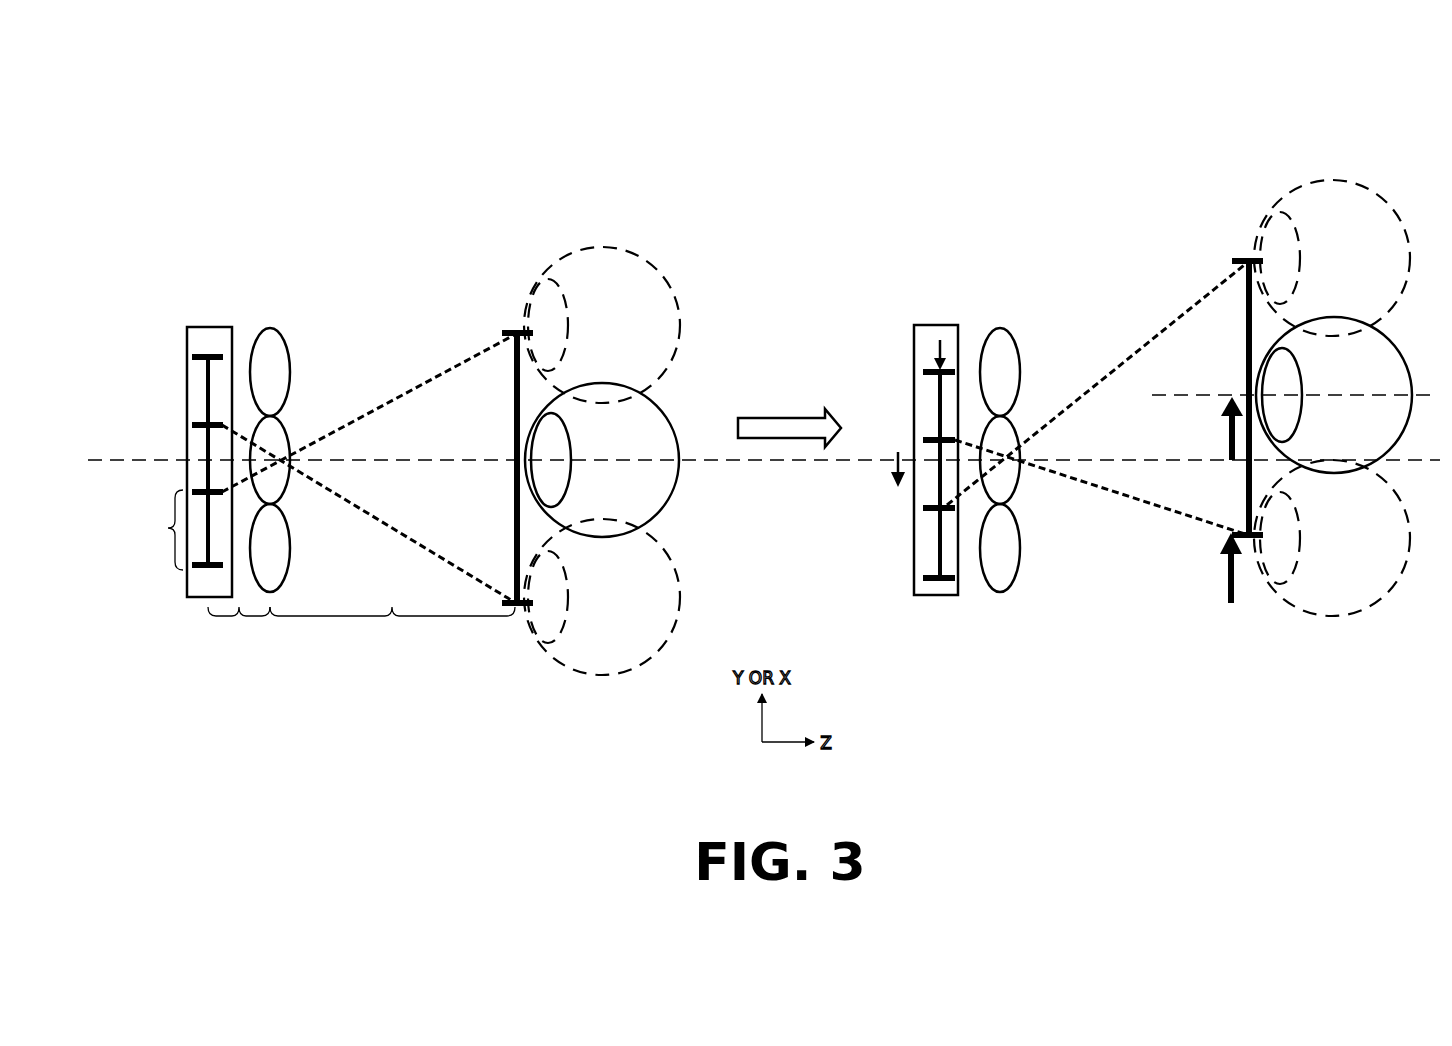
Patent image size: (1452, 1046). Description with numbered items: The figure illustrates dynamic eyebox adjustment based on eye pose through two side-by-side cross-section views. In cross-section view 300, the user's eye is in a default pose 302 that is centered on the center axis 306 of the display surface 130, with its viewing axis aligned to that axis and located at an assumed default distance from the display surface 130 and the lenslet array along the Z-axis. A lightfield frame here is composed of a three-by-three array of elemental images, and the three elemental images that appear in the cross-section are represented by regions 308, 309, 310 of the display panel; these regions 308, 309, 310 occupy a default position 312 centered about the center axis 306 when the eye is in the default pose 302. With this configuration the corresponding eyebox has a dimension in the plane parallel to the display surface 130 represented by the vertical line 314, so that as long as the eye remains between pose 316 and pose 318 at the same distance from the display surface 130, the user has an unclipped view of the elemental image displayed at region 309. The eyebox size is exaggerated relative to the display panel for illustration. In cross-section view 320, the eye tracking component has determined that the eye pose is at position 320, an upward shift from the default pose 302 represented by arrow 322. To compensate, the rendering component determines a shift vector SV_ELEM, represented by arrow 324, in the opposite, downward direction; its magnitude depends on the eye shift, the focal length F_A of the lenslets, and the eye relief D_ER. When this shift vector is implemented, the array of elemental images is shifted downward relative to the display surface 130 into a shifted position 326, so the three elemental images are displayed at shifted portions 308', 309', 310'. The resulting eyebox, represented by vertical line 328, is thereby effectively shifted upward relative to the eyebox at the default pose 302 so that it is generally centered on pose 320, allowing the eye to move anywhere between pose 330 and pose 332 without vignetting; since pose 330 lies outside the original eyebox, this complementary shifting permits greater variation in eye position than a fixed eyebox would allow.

The display surface 130 is at (236, 348).
The cross-section view 300 is at (398, 238).
The default pose 302 is at (663, 514).
The center axis 306 is at (768, 455).
The region of display panel 308 is at (173, 391).
The region of display panel 309 is at (173, 460).
The region of display panel 310 is at (168, 564).
The default position 312 is at (205, 580).
The vertical line representing eyebox 314 is at (516, 418).
The pose 316 is at (602, 246).
The pose 318 is at (602, 680).
The cross-section view / shifted eye pose 320 is at (1099, 225).
The arrow representing eye pose shift 322 is at (1228, 445).
The arrow representing shift vector SV_ELEM 324 is at (893, 480).
The shifted position 326 is at (936, 576).
The shifted portion 308' is at (902, 406).
The shifted portion 309' is at (903, 464).
The shifted portion 310' is at (902, 556).
The vertical line representing shifted eyebox 328 is at (1246, 372).
The pose 330 is at (1330, 180).
The pose 332 is at (1330, 617).